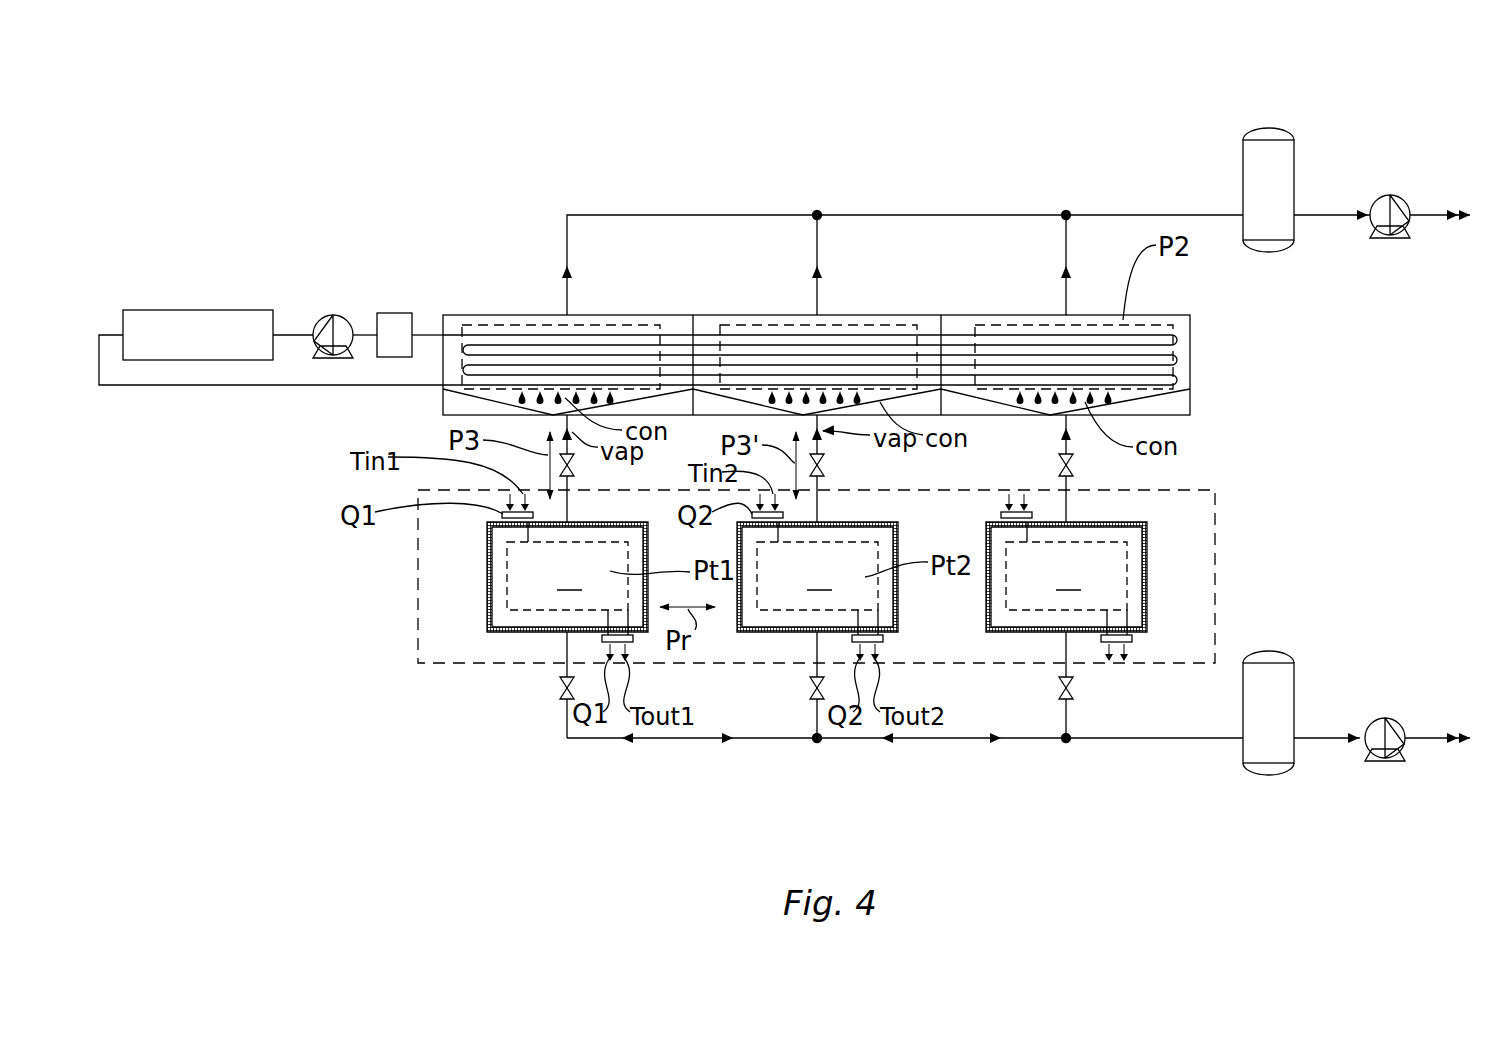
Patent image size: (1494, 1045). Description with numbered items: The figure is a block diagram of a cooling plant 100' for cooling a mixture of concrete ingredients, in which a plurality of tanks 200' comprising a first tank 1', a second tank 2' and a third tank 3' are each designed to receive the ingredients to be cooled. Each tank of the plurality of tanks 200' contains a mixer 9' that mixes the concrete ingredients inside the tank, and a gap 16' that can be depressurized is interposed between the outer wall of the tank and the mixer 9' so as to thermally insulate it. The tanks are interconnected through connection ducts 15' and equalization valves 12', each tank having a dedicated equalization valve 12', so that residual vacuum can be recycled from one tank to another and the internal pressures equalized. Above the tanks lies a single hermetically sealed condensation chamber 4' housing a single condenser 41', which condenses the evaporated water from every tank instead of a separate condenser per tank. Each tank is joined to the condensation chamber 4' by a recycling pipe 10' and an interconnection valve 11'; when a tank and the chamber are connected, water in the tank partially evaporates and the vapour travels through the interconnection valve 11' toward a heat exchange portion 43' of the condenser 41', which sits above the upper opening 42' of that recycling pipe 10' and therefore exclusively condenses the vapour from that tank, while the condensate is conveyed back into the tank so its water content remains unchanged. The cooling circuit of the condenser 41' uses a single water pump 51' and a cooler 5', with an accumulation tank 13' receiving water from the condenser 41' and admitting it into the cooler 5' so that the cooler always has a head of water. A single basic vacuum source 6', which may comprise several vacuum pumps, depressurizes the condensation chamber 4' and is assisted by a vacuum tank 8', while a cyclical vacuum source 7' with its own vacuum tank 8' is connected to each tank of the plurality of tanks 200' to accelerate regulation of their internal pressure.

The cooling plant 100' is at (229, 89).
The cooler 5' is at (271, 304).
The water pump 51' is at (317, 300).
The accumulation tank 13' is at (437, 274).
The condensation chamber 4' is at (858, 337).
The condenser 41' is at (810, 315).
The heat exchange portion 43' is at (882, 310).
The upper opening 42' is at (831, 357).
The vacuum tank 8' is at (1303, 420).
The basic vacuum source 6' is at (1409, 179).
The cyclical vacuum source 7' is at (1400, 706).
The recycling pipe 10' is at (816, 470).
The interconnection valve 11' is at (864, 468).
The gap 16' is at (744, 534).
The mixer 9' is at (817, 576).
The first tank 1' is at (529, 607).
The second tank 2' is at (781, 600).
The third tank 3' is at (1031, 595).
The equalization valve 12' is at (784, 713).
The connection ducts 15' is at (905, 777).
The plurality of tanks 200' is at (890, 576).